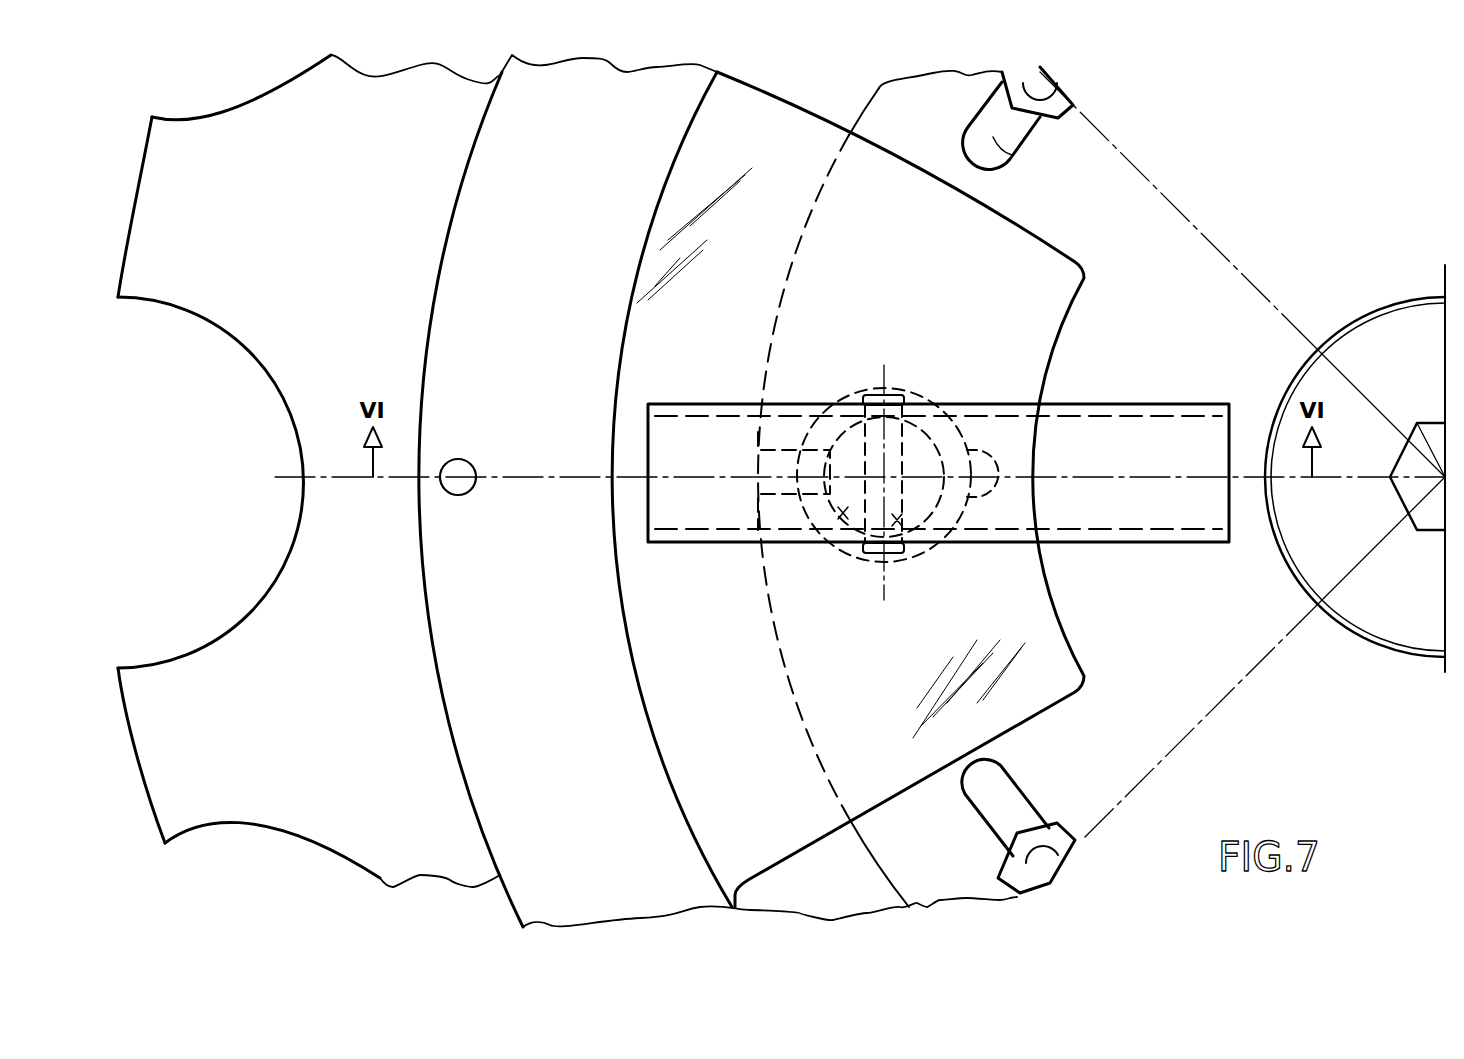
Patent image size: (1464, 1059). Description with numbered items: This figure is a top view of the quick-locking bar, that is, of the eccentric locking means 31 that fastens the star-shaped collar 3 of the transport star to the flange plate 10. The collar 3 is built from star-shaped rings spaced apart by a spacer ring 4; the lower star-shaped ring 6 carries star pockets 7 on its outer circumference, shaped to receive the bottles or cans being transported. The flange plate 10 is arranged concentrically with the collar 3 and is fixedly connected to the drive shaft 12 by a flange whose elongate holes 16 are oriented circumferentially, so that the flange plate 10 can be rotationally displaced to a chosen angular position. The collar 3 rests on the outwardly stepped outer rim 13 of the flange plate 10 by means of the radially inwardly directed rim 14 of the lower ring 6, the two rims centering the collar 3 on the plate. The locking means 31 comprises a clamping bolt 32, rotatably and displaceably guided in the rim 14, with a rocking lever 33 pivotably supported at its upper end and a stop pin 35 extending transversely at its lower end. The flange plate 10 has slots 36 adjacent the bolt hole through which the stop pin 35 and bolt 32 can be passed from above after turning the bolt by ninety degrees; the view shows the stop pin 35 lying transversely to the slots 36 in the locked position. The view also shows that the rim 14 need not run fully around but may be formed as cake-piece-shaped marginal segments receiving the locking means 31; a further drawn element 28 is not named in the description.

The star-shaped collar 3 is at (488, 307).
The spacer ring 4 is at (527, 672).
The lower star-shaped ring 6 is at (322, 627).
The star pockets 7 is at (279, 429).
The flange plate 10 is at (1143, 280).
The drive shaft 12 is at (1355, 485).
The outer rim 13 is at (958, 102).
The inwardly directed rim 14 is at (1007, 252).
The elongate holes 16 is at (995, 137).
The pin 28 is at (985, 497).
The eccentric locking means 31 is at (1006, 550).
The clamping bolt 32 is at (843, 527).
The rocking lever 33 is at (1129, 440).
The stop pin 35 is at (912, 530).
The slots 36 is at (790, 470).